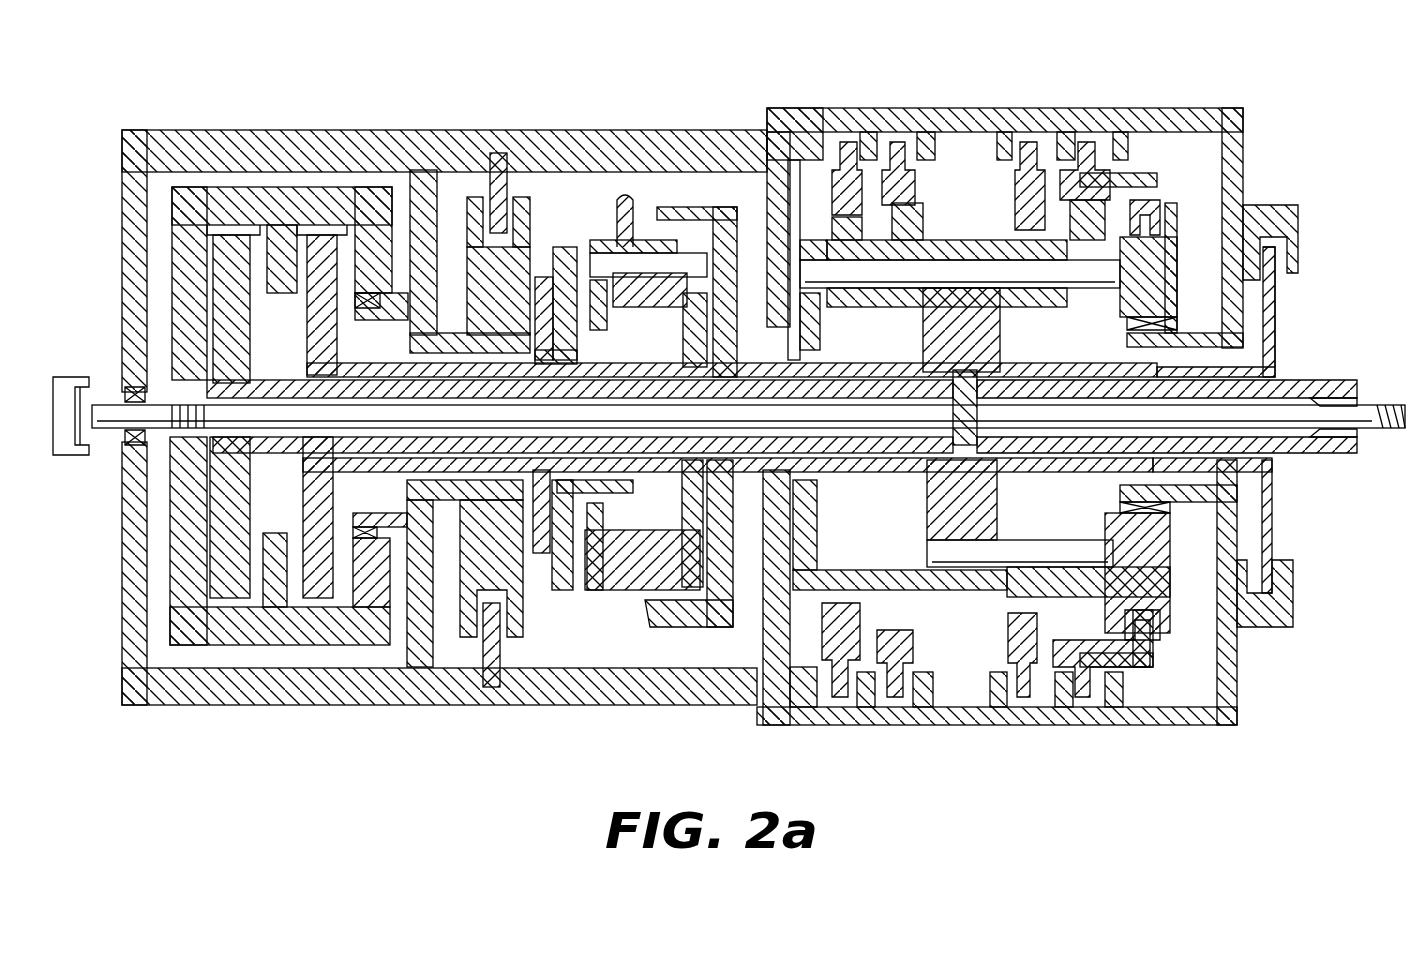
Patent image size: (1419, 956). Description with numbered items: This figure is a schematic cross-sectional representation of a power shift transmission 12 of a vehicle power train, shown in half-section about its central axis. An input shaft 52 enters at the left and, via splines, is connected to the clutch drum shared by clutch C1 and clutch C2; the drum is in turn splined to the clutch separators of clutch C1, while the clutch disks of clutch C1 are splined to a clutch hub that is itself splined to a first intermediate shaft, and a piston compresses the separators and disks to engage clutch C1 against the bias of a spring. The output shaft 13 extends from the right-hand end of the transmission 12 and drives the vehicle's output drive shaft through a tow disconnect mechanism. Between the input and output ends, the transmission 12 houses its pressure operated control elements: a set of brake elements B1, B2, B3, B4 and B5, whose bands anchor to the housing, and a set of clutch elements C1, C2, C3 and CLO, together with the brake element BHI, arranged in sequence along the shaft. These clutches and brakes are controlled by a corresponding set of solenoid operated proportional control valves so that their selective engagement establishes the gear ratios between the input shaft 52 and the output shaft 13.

The power shift transmission 12 is at (1276, 86).
The output shaft 13 is at (1284, 378).
The input shaft 52 is at (107, 392).
The clutch element C1 is at (240, 218).
The clutch element C2 is at (323, 218).
The clutch element C3 is at (1183, 214).
The brake element BHI is at (477, 181).
The clutch element CLO is at (544, 278).
The brake element B1 is at (850, 140).
The brake element B2 is at (903, 140).
The brake element B3 is at (1031, 140).
The brake element B4 is at (1089, 140).
The brake element B5 is at (1269, 236).